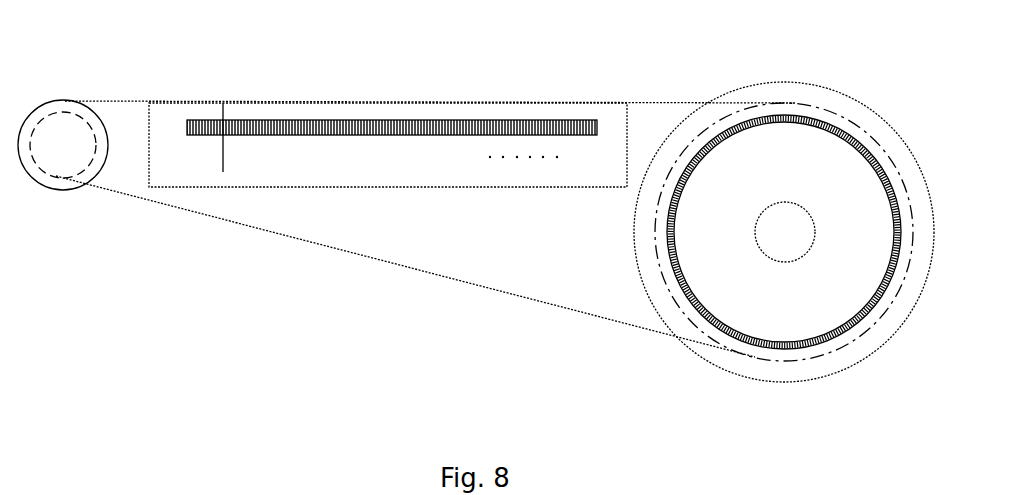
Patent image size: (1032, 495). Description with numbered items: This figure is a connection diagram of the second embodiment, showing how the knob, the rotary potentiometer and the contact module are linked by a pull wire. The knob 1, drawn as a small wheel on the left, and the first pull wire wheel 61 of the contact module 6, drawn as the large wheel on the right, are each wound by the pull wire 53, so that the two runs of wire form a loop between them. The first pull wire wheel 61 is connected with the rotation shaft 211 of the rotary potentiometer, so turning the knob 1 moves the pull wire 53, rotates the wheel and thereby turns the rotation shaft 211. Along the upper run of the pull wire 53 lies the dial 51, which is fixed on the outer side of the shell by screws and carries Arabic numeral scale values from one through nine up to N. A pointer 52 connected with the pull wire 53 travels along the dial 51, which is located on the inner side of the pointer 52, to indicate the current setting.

The knob 1 is at (50, 137).
The pull wire 53 is at (125, 102).
The dial 51 is at (302, 178).
The pointer 52 is at (222, 170).
The contact module 6 is at (840, 170).
The first pull wire wheel 61 is at (812, 312).
The rotation shaft 211 is at (778, 236).